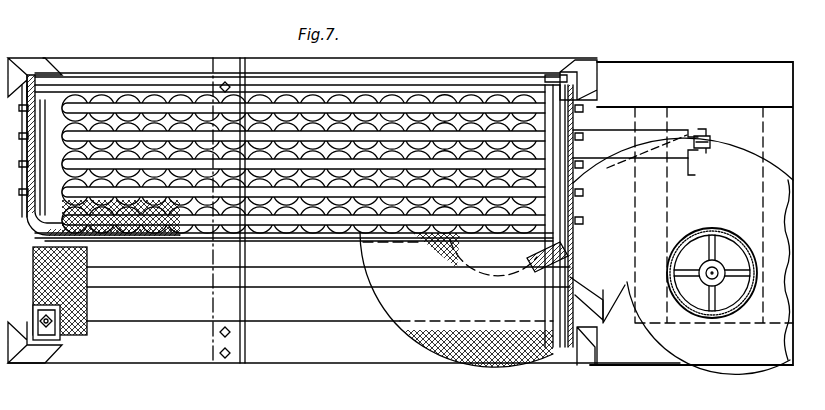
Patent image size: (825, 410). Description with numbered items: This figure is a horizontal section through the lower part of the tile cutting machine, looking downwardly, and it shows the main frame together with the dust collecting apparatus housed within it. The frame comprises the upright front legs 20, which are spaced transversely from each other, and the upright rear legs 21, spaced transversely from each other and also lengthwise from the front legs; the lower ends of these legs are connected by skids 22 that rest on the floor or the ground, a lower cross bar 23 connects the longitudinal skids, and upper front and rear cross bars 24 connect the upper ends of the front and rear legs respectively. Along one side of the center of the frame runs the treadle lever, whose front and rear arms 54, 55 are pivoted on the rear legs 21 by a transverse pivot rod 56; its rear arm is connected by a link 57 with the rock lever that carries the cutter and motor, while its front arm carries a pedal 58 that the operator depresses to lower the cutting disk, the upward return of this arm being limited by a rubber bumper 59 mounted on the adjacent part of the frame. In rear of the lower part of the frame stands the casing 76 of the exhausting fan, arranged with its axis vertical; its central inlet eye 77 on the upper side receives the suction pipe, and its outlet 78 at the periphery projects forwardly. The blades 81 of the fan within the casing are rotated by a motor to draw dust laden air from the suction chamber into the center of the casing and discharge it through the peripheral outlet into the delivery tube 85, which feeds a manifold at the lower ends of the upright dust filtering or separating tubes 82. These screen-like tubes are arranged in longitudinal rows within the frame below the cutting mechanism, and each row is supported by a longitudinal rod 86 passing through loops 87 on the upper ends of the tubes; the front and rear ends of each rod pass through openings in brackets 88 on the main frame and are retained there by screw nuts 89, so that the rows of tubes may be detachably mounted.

The upright front legs 20 is at (33, 52).
The upright rear legs 21 is at (575, 66).
The skids 22 is at (180, 63).
The lower cross bar 23 is at (238, 304).
The upper front and rear cross bars 24 is at (22, 135).
The front arm of treadle lever 54 is at (336, 267).
The rear arm of treadle lever 55 is at (698, 172).
The transverse pivot rod 56 is at (548, 298).
The link 57 is at (706, 140).
The pedal 58 is at (82, 330).
The rubber bumper 59 is at (57, 337).
The casing of exhausting fan 76 is at (683, 218).
The central inlet eye 77 is at (696, 232).
The outlet 78 is at (595, 267).
The blades of the fan 81 is at (738, 272).
The dust filtering or separating tubes 82 is at (300, 95).
The delivery tube 85 is at (456, 299).
The longitudinal rod 86 is at (580, 130).
The loops 87 is at (496, 105).
The brackets 88 is at (570, 191).
The screw nuts 89 is at (580, 160).